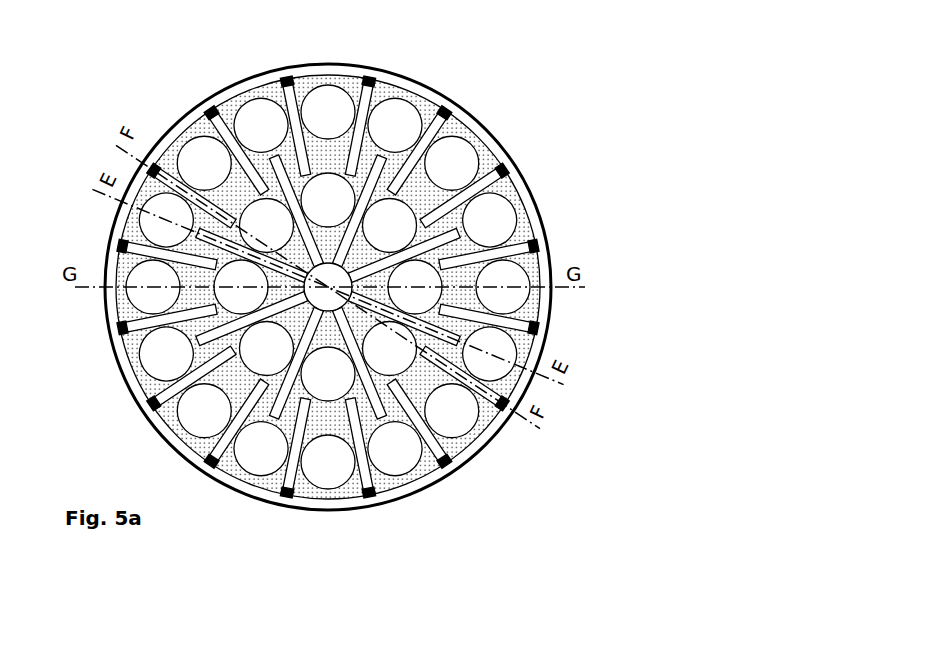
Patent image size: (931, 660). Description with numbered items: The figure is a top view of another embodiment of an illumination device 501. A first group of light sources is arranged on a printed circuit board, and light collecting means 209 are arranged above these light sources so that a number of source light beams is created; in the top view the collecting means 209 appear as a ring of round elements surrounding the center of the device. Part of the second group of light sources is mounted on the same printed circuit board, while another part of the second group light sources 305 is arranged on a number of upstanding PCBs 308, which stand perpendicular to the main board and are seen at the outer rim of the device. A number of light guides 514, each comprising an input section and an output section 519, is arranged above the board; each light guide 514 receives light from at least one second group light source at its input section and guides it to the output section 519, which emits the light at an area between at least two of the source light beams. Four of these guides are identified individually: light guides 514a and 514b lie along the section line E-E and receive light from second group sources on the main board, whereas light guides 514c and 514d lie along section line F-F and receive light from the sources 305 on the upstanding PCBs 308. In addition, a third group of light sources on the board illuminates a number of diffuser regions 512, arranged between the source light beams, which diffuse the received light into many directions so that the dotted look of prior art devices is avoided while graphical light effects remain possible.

The illumination device 501 is at (660, 58).
The second group light sources 305 is at (408, 82).
The upstanding PCBs 308 is at (370, 71).
The light collecting means 209 is at (392, 233).
The diffuser regions 512 is at (330, 348).
The light guides 514 is at (425, 347).
The light guide 514a is at (228, 325).
The light guide 514b is at (463, 343).
The light guide 514c is at (171, 180).
The light guide 514d is at (500, 403).
The output section 519 is at (290, 98).